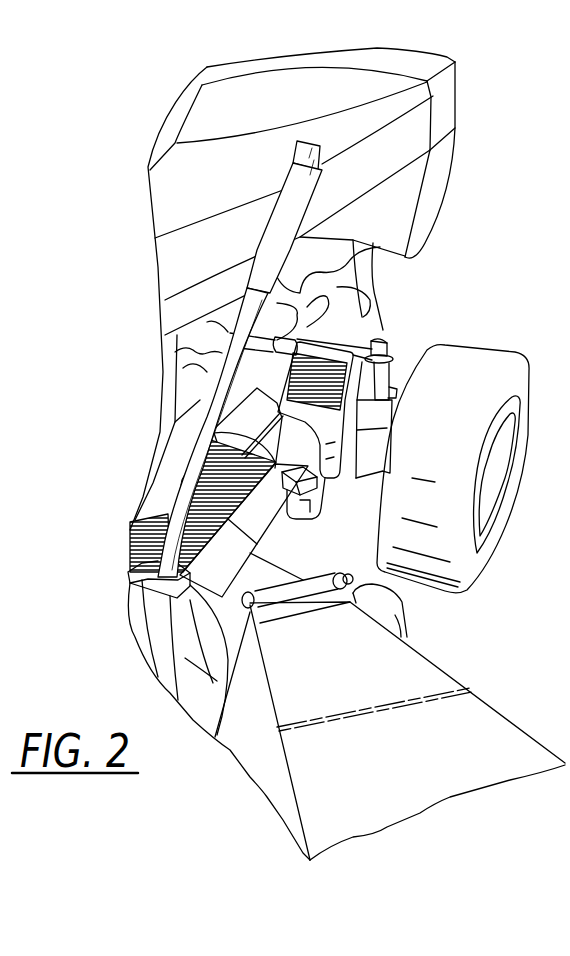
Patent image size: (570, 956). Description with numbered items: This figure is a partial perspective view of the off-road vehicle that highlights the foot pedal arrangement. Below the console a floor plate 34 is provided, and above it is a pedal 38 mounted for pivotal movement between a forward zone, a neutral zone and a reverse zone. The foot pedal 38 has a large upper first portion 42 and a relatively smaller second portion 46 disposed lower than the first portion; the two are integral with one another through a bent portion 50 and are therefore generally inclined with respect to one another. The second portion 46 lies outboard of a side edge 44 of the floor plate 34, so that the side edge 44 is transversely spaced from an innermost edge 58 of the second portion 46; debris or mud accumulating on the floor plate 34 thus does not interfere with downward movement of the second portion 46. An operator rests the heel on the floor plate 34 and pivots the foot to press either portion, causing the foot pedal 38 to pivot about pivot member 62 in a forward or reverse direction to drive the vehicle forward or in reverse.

The floor plate 34 is at (197, 482).
The pedal 38 is at (356, 340).
The first portion 42 is at (385, 380).
The side edge 44 is at (163, 515).
The second portion 46 is at (282, 492).
The bent portion 50 is at (346, 470).
The innermost edge 58 is at (210, 431).
The pivot member 62 is at (320, 507).